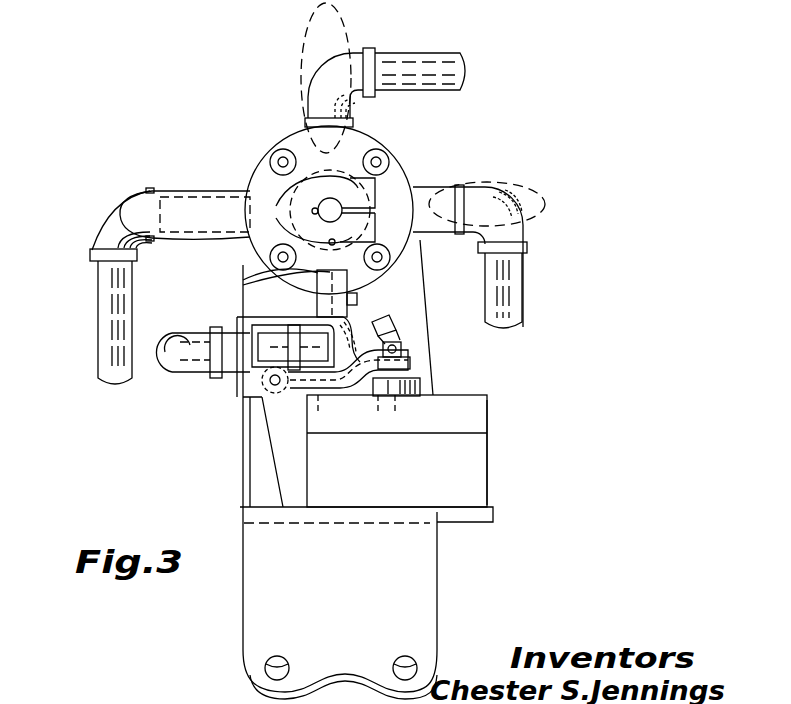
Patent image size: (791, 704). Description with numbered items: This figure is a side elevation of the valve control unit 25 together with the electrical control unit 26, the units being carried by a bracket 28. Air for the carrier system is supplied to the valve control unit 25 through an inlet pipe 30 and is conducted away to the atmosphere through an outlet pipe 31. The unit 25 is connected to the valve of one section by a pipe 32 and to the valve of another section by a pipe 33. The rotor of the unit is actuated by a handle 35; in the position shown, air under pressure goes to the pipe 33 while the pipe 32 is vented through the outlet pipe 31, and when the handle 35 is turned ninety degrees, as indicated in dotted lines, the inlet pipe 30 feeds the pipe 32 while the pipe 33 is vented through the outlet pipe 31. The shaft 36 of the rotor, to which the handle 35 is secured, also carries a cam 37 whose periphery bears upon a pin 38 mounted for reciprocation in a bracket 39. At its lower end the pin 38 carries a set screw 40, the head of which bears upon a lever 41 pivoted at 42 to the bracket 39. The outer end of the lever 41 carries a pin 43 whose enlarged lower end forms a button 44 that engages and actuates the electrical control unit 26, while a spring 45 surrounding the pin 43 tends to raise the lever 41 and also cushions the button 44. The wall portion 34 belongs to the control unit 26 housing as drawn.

The valve control unit 25 is at (283, 132).
The electrical control unit 26 is at (397, 451).
The bracket 28 is at (340, 605).
The pipe 30 is at (178, 372).
The pipe 31 is at (327, 58).
The pipe 32 is at (98, 298).
The pipe 33 is at (517, 285).
The box side wall 34 is at (509, 452).
The handle 35 is at (193, 190).
The shaft 36 is at (336, 207).
The cam 37 is at (350, 285).
The pin 38 is at (262, 284).
The bracket 39 is at (258, 307).
The set screw 40 is at (348, 386).
The lever 41 is at (403, 358).
The pivot 42 is at (265, 384).
The pin 43 is at (398, 340).
The button 44 is at (432, 389).
The spring 45 is at (412, 378).